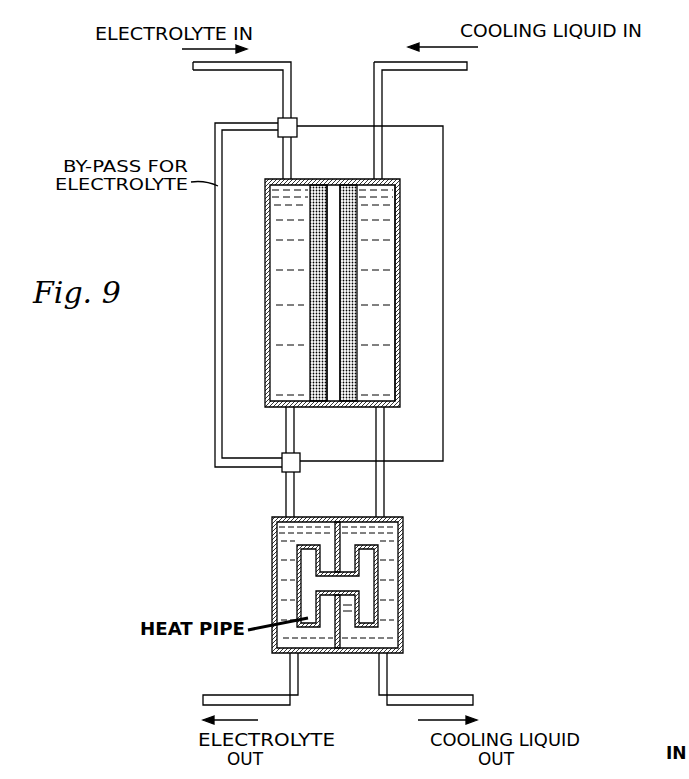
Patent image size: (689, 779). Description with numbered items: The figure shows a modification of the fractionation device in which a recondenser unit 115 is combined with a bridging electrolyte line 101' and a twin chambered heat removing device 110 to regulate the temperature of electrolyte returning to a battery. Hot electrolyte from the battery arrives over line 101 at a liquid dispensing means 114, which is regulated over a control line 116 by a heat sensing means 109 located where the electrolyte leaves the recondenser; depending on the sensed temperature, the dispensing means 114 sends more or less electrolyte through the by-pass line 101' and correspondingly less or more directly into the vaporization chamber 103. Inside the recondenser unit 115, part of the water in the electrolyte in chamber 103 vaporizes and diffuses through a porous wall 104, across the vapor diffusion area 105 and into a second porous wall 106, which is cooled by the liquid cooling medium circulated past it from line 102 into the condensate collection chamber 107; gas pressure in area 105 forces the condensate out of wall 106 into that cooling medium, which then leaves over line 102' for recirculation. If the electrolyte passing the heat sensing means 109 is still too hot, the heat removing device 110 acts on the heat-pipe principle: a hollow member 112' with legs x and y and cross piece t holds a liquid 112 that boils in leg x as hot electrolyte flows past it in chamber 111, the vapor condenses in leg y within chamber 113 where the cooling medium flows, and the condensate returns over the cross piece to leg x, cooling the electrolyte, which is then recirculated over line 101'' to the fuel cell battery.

The electrolyte line 101 is at (242, 120).
The liquid dispensing means 114 is at (305, 118).
The cooling medium line 102 is at (425, 120).
The bridging electrolyte line 101' is at (223, 295).
The control line 116 is at (445, 343).
The heat sensing means 109 is at (279, 473).
The porous wall 104 is at (267, 233).
The vaporization chamber 103 is at (284, 272).
The porous wall 106 is at (404, 307).
The condensate collection chamber 107 is at (386, 269).
The vapor diffusion area 105 is at (333, 215).
The recondenser unit 115 is at (404, 222).
The chamber 113 is at (405, 538).
The chamber 111 is at (283, 539).
The liquid 112 is at (397, 582).
The hollow member 112' is at (402, 577).
The heat removing device 110 is at (272, 617).
The electrolyte return line 101'' is at (250, 679).
The cooling medium outlet line 102' is at (433, 675).